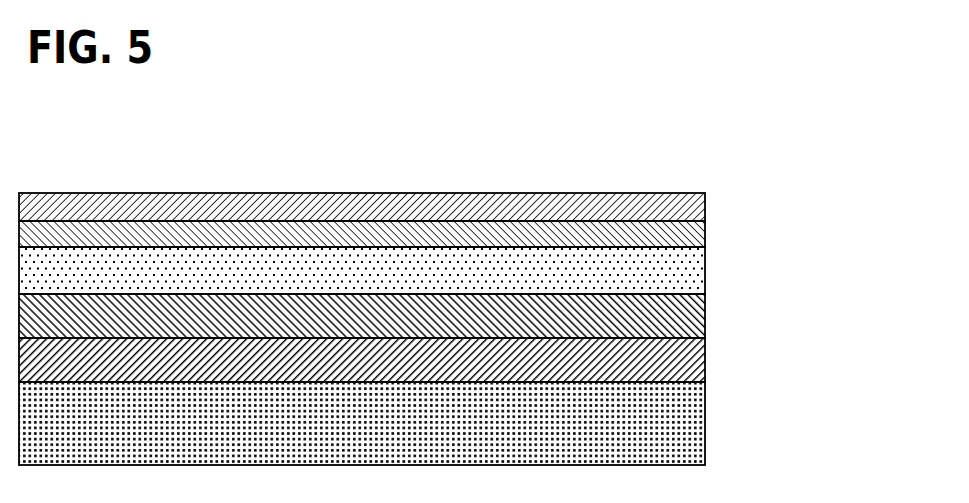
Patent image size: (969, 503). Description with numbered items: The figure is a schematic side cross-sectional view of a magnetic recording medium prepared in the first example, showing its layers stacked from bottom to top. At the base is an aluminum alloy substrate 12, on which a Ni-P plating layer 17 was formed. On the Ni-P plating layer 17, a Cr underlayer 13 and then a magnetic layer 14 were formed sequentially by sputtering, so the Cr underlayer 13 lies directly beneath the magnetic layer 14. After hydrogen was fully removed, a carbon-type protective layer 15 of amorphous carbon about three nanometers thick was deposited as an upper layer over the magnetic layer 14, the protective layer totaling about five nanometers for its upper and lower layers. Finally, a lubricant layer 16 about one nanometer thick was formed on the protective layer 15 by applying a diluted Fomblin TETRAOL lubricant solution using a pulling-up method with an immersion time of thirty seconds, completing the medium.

The aluminum alloy substrate 12 is at (685, 418).
The Cr underlayer 13 is at (705, 317).
The magnetic layer 14 is at (685, 273).
The carbon-type protective layer 15 is at (705, 232).
The lubricant layer 16 is at (705, 199).
The Ni-P plating layer 17 is at (705, 360).